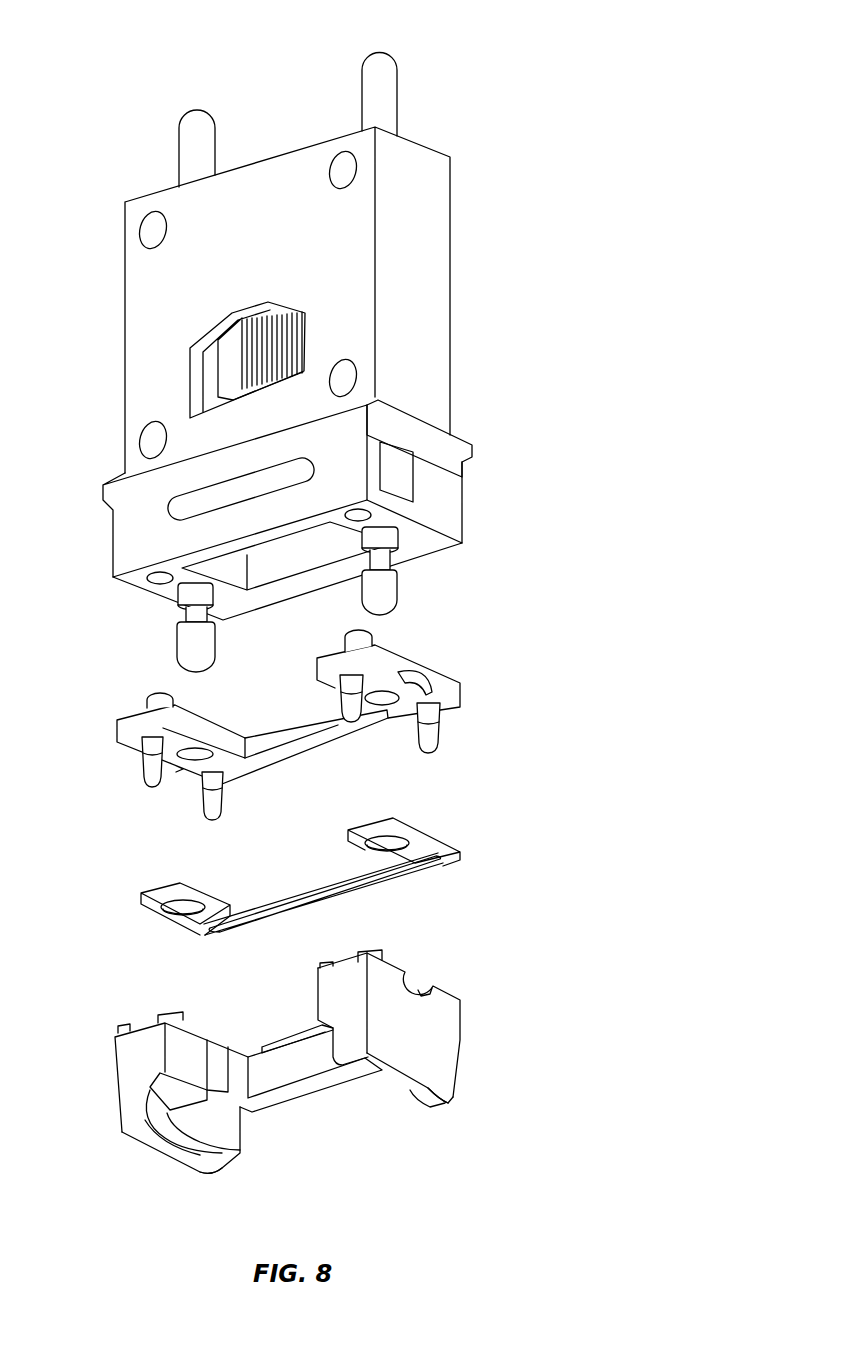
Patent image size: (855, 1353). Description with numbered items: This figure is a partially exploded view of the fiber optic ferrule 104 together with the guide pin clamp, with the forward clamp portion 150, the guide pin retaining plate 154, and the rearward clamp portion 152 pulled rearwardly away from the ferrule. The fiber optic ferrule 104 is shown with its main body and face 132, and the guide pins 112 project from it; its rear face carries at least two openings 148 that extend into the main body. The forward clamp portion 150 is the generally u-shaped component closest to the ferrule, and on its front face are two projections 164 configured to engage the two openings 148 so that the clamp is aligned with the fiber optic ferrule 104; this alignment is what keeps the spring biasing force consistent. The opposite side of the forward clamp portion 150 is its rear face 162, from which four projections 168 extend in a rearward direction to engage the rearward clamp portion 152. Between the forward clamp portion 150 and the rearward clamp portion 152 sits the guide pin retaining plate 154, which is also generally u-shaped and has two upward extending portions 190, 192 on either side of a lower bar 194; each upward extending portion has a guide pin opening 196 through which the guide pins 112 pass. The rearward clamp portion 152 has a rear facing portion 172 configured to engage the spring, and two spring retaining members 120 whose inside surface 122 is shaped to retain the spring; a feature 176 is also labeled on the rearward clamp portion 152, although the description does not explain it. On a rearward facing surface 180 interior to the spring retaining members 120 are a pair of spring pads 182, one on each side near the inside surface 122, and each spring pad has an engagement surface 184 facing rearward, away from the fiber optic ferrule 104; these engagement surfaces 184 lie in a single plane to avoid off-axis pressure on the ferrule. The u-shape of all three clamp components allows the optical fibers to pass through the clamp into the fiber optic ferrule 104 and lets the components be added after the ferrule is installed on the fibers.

The fiber optic ferrule 104 is at (452, 312).
The guide pins 112 is at (385, 52).
The openings 148 is at (382, 505).
The front face 132 is at (442, 543).
The forward clamp portion 150 is at (460, 700).
The rear face 162 is at (368, 735).
The projections 164 is at (147, 698).
The projections 168 is at (142, 775).
The guide pin retaining plate 154 is at (305, 886).
The upward extending portion 190 is at (153, 885).
The upward extending portion 192 is at (408, 826).
The lower bar 194 is at (285, 922).
The guide pin openings 196 is at (188, 885).
The rear facing portion 172 is at (289, 1090).
The rearward clamp portion 152 is at (295, 1087).
The slot 176 is at (213, 1062).
The rearward facing surface 180 is at (233, 1110).
The spring pads 182 is at (160, 1088).
The engagement surface 184 is at (150, 1112).
The inside surface 122 is at (217, 1140).
The spring retaining members 120 is at (217, 1140).